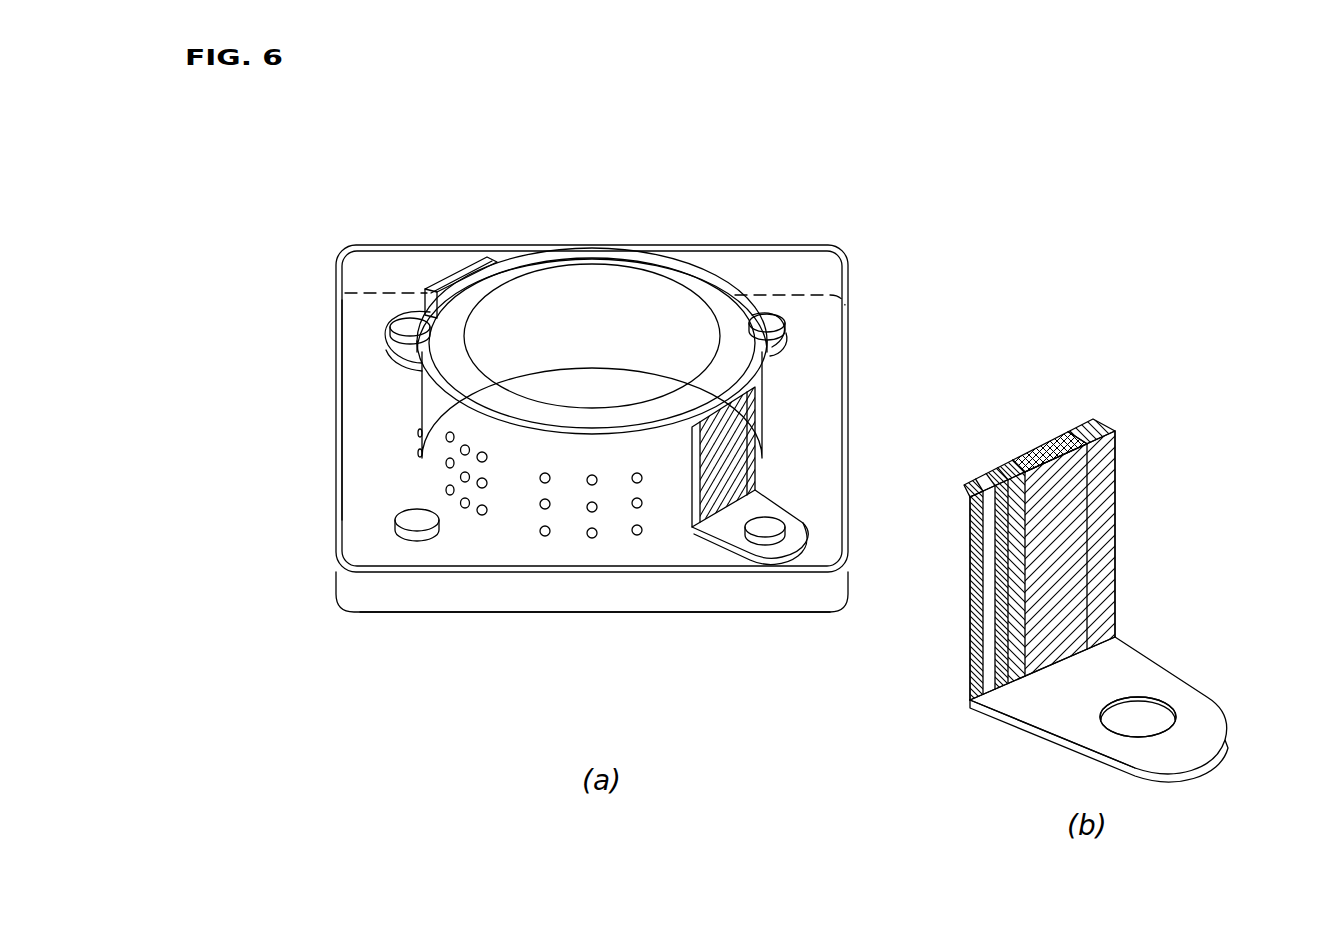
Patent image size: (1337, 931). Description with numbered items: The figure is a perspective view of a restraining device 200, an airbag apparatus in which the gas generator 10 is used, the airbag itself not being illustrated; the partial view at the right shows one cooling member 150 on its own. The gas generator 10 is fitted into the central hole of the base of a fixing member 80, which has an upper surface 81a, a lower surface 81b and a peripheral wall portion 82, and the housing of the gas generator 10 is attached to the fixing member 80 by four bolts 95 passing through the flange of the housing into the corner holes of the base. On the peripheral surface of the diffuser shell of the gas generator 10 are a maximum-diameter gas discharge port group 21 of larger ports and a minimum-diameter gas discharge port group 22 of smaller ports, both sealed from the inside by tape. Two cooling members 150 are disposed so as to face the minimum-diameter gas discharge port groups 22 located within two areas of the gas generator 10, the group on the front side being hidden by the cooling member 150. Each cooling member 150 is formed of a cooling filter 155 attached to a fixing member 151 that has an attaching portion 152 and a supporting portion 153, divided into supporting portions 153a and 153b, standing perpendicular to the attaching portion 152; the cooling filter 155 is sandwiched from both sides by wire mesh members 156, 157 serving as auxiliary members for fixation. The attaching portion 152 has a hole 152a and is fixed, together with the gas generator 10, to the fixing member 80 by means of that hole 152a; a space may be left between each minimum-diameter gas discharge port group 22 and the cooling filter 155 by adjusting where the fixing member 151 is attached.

The gas generator 10 is at (573, 286).
The restraining device 200 is at (742, 243).
The fixing member 80 is at (820, 330).
The upper surface 81a is at (360, 367).
The lower surface 81b is at (672, 618).
The peripheral wall portion 82 is at (380, 595).
The bolt 95 is at (415, 522).
The maximum-diameter gas discharge port group 21 is at (556, 534).
The minimum-diameter gas discharge port group 22 is at (465, 528).
The cooling member 150 is at (468, 256).
The fixing member 151 is at (880, 722).
The attaching portion 152 is at (1062, 723).
The hole 152a is at (1146, 717).
The supporting portion 153 is at (988, 670).
The supporting portion 153a is at (1000, 497).
The supporting portion 153b is at (1093, 420).
The cooling filter 155 is at (1027, 462).
The wire mesh member 156 is at (1107, 481).
The wire mesh member 157 is at (1082, 425).